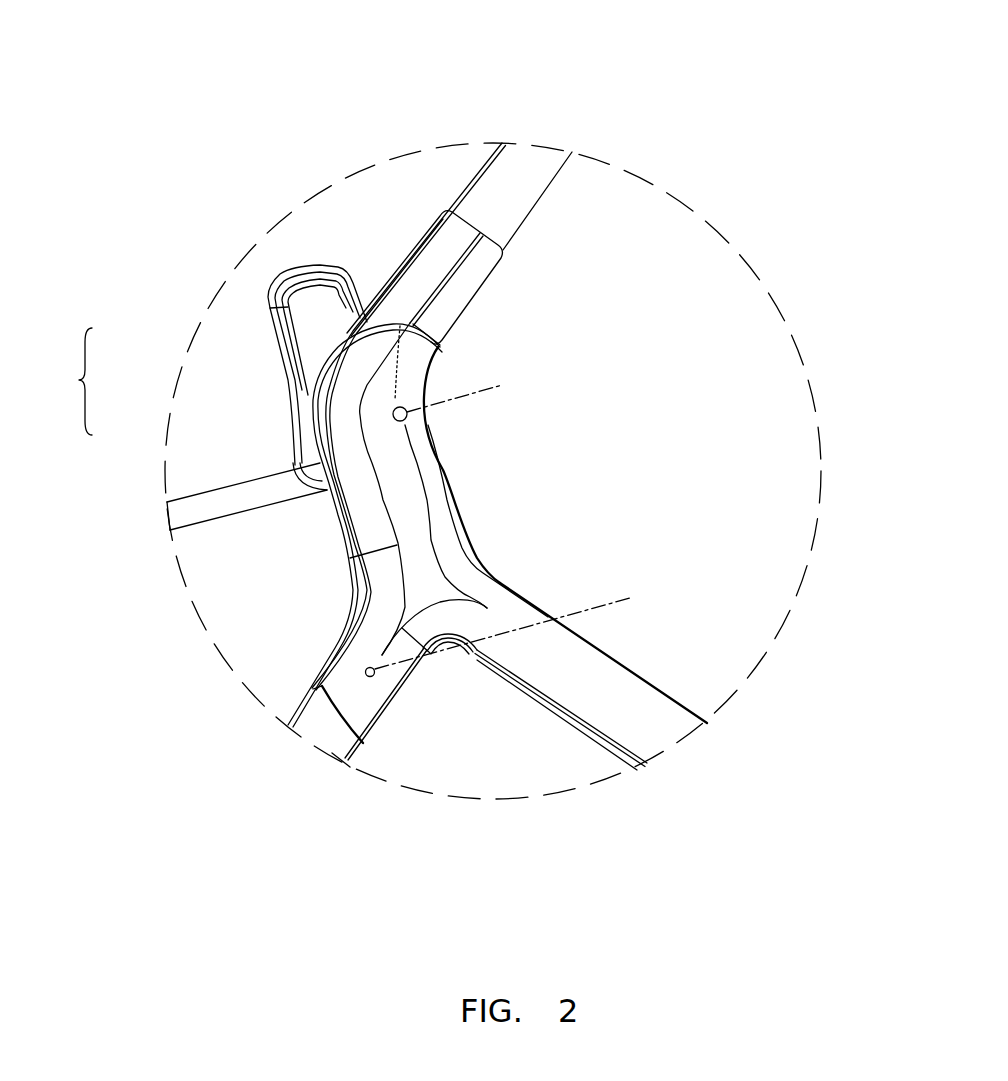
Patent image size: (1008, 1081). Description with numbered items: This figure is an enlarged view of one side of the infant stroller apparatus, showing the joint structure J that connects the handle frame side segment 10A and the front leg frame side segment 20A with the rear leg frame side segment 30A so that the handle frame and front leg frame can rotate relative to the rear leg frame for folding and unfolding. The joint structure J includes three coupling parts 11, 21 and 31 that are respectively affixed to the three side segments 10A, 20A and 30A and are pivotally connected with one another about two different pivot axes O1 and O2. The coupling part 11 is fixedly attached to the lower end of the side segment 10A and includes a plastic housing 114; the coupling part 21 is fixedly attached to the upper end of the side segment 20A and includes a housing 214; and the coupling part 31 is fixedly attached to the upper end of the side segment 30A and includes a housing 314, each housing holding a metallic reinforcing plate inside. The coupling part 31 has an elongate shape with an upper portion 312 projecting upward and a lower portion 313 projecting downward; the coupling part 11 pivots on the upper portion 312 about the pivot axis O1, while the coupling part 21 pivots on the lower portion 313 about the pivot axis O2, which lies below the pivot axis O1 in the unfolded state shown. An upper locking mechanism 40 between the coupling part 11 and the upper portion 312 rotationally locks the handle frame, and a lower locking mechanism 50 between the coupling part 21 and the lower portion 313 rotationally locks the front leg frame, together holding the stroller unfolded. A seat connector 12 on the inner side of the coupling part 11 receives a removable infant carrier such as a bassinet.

The side segment of the handle frame 10A is at (512, 183).
The coupling part 11 is at (470, 318).
The housing 114 is at (462, 283).
The seat connector 12 is at (320, 312).
The upper locking mechanism 40 is at (452, 373).
The joint structure J is at (491, 547).
The coupling part 31 is at (70, 381).
The upper portion of the coupling part 312 is at (373, 397).
The lower portion of the coupling part 313 is at (362, 653).
The housing 314 is at (438, 511).
The pivot axis O1 is at (462, 397).
The pivot axis O2 is at (597, 604).
The side segment of the front leg frame 20A is at (318, 727).
The coupling part 21 is at (373, 742).
The housing 214 is at (326, 660).
The lower locking mechanism 50 is at (424, 690).
The side segment of the rear leg frame 30A is at (603, 700).